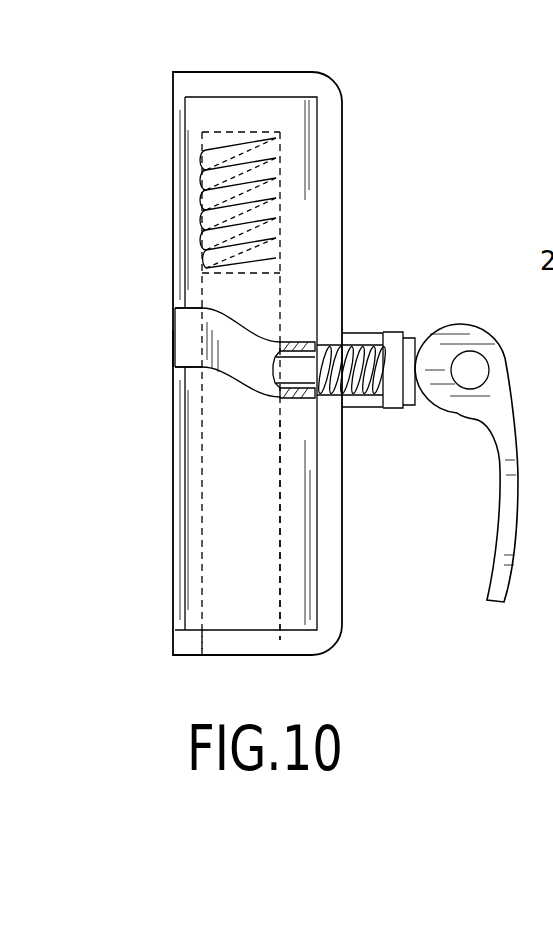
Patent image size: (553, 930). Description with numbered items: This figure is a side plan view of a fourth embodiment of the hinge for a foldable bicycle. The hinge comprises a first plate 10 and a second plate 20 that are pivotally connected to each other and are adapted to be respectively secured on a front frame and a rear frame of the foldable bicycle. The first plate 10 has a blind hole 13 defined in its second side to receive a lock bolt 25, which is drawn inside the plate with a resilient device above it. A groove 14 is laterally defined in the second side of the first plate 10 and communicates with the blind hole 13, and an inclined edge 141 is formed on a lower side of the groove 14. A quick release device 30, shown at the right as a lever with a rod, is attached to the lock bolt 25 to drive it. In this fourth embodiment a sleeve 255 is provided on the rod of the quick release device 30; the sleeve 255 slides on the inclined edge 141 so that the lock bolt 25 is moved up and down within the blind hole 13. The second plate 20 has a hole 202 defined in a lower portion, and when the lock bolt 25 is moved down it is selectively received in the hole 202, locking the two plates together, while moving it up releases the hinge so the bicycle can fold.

The first plate 10 is at (183, 119).
The second plate 20 is at (332, 172).
The lock bolt 25 is at (212, 310).
The sleeve 255 is at (300, 343).
The groove 14 is at (185, 332).
The inclined edge 141 is at (176, 359).
The blind hole 13 is at (280, 535).
The hole 202 is at (278, 636).
The quick release device 30 is at (412, 412).